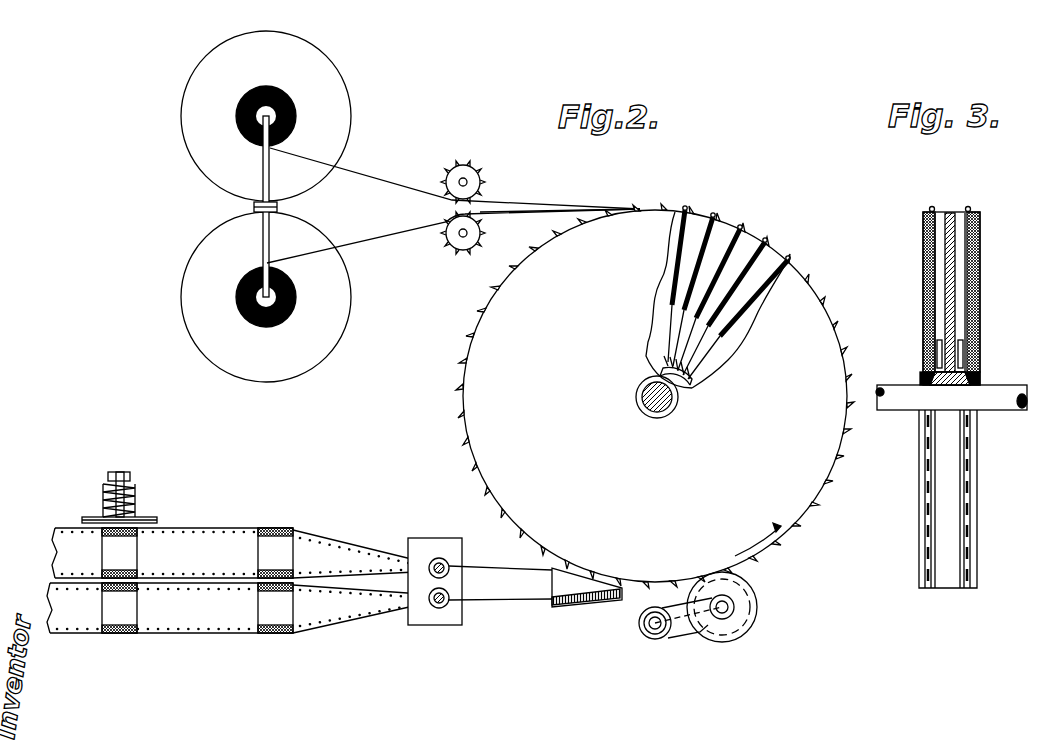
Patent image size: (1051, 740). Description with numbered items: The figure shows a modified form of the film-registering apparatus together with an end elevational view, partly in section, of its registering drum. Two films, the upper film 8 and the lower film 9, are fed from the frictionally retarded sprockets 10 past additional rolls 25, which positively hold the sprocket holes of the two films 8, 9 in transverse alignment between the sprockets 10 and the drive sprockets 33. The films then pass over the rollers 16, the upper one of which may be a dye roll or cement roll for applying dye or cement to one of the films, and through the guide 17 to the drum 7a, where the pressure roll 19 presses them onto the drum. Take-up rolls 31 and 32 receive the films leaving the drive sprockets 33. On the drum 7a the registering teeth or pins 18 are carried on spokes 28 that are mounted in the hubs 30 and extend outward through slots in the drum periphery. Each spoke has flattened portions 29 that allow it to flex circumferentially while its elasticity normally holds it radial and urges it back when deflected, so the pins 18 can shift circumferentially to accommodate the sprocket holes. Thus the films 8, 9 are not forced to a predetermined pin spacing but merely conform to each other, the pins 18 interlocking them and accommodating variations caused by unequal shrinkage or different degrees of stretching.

In FIG. 2, the take-up roll 31 is at (192, 133).
In FIG. 2, the take-up roll 32 is at (195, 278).
In FIG. 2, the drive sprockets 33 is at (470, 225).
In FIG. 2, the drum 7a is at (792, 473).
In FIG. 3, the drum 7a is at (947, 575).
In FIG. 2, the registering teeth or pins 18 is at (788, 258).
In FIG. 3, the registering teeth or pins 18 is at (968, 208).
In FIG. 2, the spokes 28 is at (717, 287).
In FIG. 3, the spokes 28 is at (928, 272).
In FIG. 2, the flattened portions 29 is at (693, 360).
In FIG. 3, the flattened portions 29 is at (932, 353).
In FIG. 2, the hubs 30 is at (682, 382).
In FIG. 3, the hubs 30 is at (972, 367).
In FIG. 2, the upper bar 8 is at (72, 552).
In FIG. 2, the lower bar 9 is at (62, 605).
In FIG. 2, the frictionally retarded sprockets 10 is at (123, 565).
In FIG. 2, the rolls 25 is at (280, 598).
In FIG. 2, the rollers 16 is at (452, 575).
In FIG. 2, the guide 17 is at (580, 605).
In FIG. 2, the pressure roll 19 is at (732, 627).